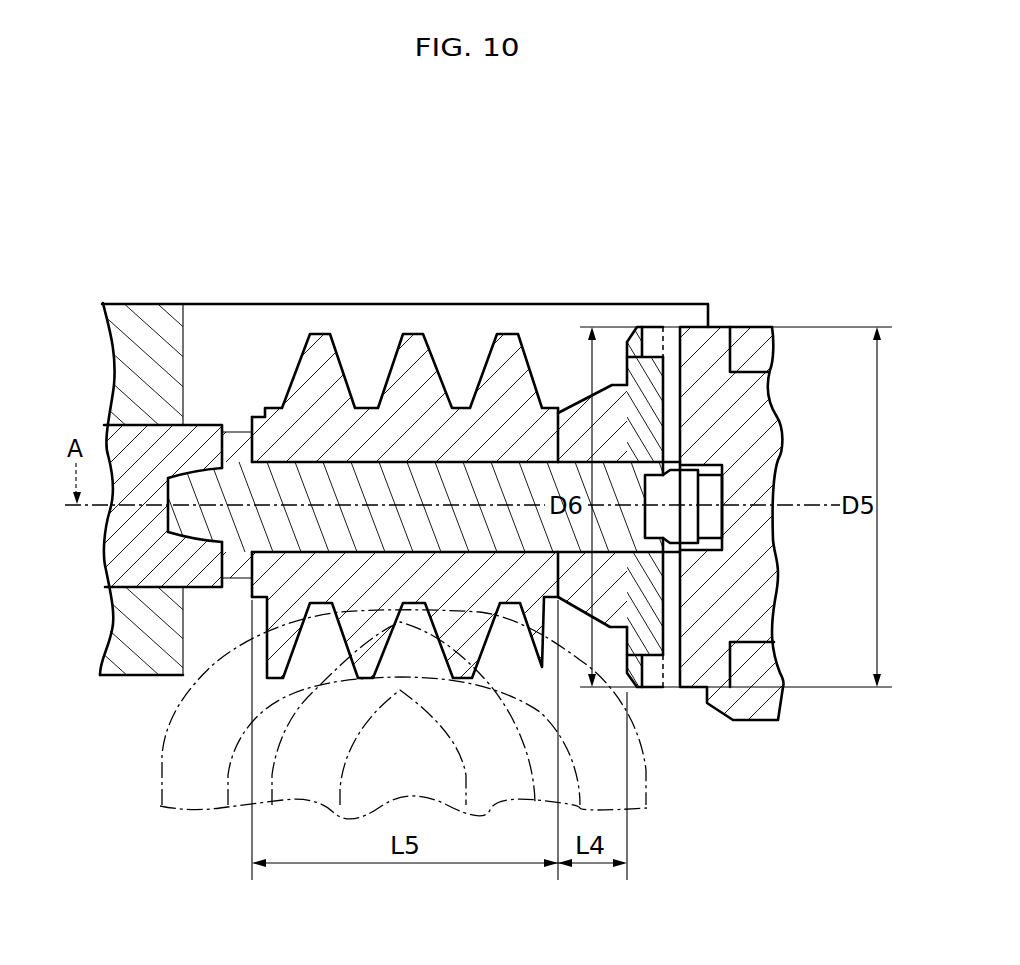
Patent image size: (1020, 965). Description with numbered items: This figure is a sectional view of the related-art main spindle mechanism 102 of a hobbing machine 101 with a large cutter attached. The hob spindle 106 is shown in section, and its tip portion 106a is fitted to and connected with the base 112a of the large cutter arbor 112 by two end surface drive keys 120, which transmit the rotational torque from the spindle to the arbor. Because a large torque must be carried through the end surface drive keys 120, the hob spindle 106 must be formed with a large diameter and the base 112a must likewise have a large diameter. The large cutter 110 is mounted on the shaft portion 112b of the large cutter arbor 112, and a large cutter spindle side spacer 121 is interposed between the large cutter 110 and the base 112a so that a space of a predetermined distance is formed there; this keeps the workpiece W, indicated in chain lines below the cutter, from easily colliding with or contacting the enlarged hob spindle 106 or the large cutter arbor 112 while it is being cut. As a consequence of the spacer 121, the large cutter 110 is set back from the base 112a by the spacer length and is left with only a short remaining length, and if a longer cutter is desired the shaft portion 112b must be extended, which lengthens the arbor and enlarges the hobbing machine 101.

The hobbing machine 101 is at (215, 300).
The main spindle mechanism 102 is at (424, 451).
The hob spindle 106 is at (760, 488).
The tip portion of the hob spindle 106a is at (695, 337).
The large cutter 110 is at (415, 352).
The large cutter arbor 112 is at (463, 468).
The base of the large cutter arbor 112a is at (645, 375).
The shaft portion of the large cutter arbor 112b is at (368, 460).
The end surface drive key 120 is at (655, 340).
The large cutter spindle side spacer 121 is at (575, 432).
The workpiece W is at (195, 766).